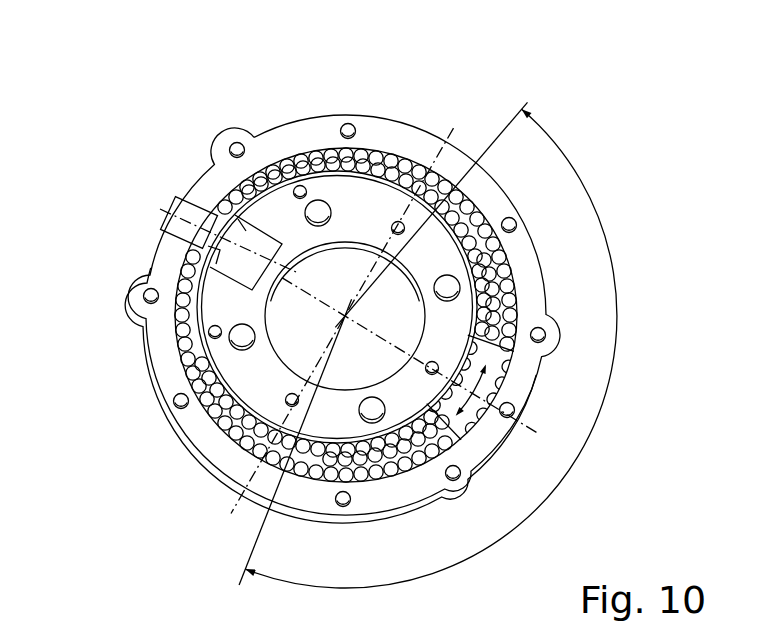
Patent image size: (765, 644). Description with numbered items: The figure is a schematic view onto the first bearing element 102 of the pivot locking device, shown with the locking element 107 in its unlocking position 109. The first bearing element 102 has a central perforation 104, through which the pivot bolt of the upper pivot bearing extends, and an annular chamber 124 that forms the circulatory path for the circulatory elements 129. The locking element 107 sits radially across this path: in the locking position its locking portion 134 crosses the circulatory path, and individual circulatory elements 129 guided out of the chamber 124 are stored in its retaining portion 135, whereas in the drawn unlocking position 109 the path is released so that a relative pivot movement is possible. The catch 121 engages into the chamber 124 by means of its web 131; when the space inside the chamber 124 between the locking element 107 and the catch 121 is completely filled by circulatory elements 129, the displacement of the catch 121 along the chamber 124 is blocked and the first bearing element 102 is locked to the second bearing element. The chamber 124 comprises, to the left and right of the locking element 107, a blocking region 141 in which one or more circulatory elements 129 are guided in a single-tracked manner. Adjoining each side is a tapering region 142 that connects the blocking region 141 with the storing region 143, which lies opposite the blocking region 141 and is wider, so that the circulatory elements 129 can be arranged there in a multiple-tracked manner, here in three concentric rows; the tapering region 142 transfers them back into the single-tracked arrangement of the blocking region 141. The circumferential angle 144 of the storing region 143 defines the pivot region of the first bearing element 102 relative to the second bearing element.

The first bearing element 102 is at (428, 101).
The perforation 104 is at (312, 258).
The locking element 107 is at (176, 196).
The unlocking position 109 is at (137, 215).
The catch 121 is at (515, 369).
The chamber 124 is at (363, 153).
The circulatory elements 129 is at (324, 156).
The web 131 is at (514, 355).
The locking portion 134 is at (213, 244).
The retaining portion 135 is at (163, 231).
The blocking region 141 is at (221, 181).
The tapering region 142 is at (480, 196).
The storing region 143 is at (540, 301).
The circumferential angle 144 is at (546, 505).